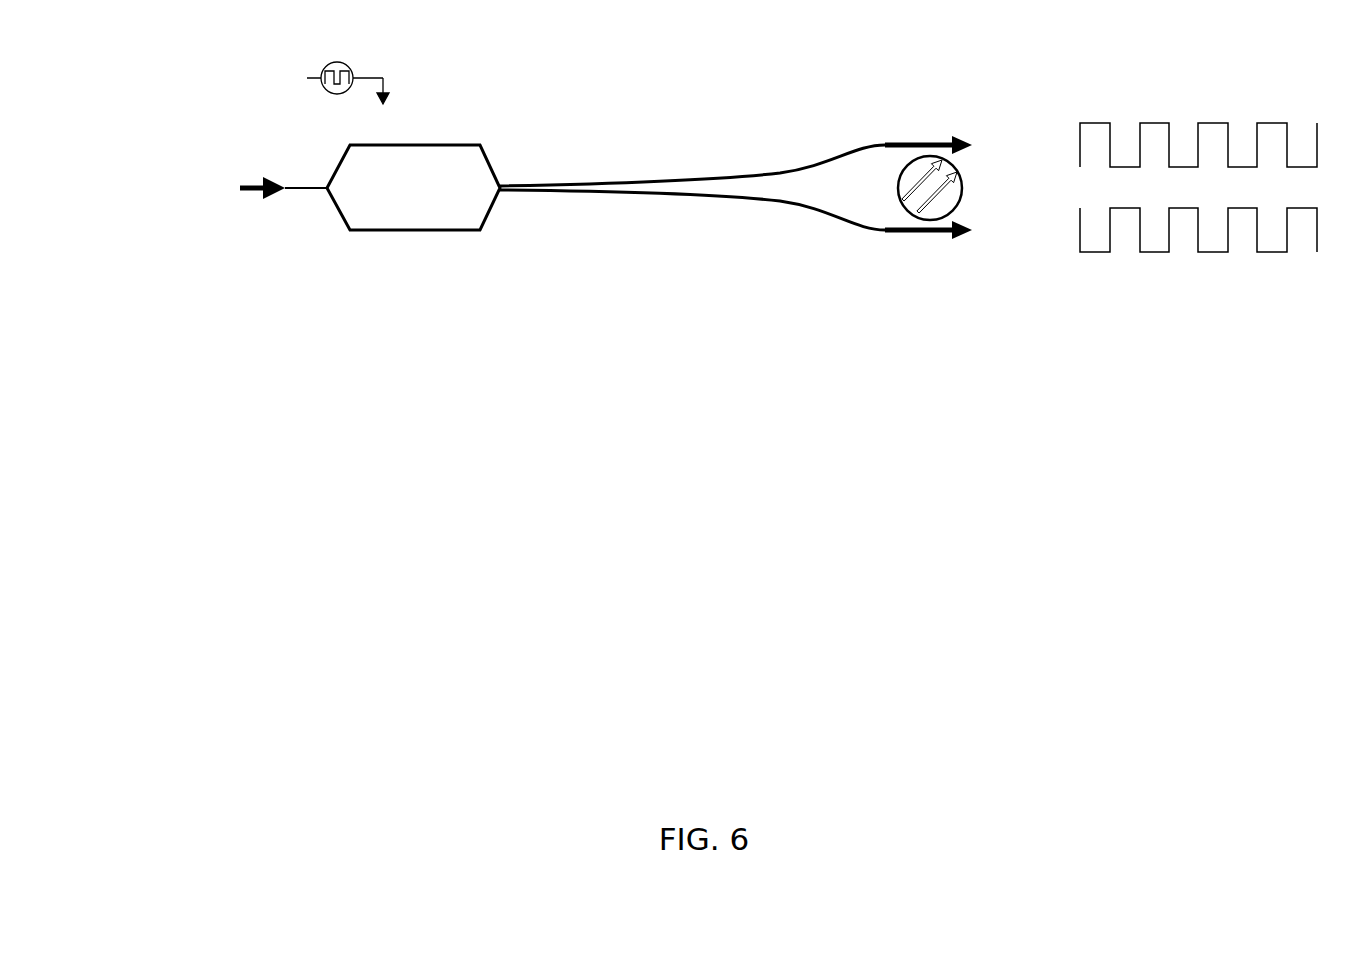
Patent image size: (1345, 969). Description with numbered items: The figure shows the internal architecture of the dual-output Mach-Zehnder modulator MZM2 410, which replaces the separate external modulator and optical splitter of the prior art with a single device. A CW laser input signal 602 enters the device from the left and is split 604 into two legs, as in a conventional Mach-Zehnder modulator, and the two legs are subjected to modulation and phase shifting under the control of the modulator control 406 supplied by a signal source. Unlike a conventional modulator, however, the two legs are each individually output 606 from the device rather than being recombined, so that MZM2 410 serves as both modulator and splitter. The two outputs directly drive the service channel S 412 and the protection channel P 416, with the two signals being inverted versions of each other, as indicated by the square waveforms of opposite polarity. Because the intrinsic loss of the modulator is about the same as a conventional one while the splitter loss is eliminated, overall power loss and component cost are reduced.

The modulator control 406 is at (383, 68).
The dual-output Mach-Zehnder modulator (MZM2) 410 is at (415, 103).
The CW laser input signal 602 is at (247, 186).
The split 604 is at (350, 198).
The individual outputs of the two legs 606 is at (522, 192).
The service channel S 412 is at (1040, 125).
The protection channel P 416 is at (1037, 252).